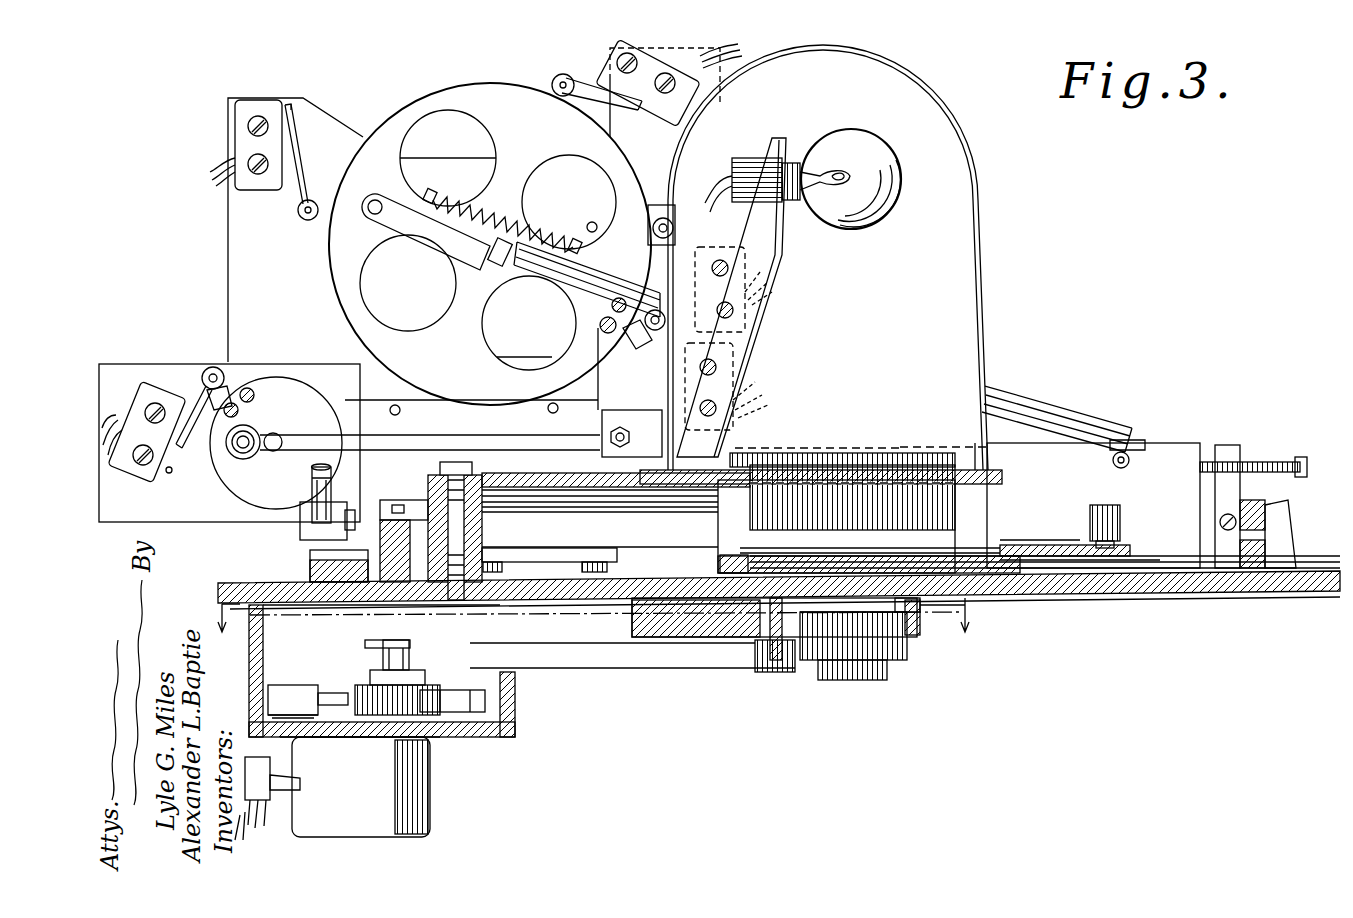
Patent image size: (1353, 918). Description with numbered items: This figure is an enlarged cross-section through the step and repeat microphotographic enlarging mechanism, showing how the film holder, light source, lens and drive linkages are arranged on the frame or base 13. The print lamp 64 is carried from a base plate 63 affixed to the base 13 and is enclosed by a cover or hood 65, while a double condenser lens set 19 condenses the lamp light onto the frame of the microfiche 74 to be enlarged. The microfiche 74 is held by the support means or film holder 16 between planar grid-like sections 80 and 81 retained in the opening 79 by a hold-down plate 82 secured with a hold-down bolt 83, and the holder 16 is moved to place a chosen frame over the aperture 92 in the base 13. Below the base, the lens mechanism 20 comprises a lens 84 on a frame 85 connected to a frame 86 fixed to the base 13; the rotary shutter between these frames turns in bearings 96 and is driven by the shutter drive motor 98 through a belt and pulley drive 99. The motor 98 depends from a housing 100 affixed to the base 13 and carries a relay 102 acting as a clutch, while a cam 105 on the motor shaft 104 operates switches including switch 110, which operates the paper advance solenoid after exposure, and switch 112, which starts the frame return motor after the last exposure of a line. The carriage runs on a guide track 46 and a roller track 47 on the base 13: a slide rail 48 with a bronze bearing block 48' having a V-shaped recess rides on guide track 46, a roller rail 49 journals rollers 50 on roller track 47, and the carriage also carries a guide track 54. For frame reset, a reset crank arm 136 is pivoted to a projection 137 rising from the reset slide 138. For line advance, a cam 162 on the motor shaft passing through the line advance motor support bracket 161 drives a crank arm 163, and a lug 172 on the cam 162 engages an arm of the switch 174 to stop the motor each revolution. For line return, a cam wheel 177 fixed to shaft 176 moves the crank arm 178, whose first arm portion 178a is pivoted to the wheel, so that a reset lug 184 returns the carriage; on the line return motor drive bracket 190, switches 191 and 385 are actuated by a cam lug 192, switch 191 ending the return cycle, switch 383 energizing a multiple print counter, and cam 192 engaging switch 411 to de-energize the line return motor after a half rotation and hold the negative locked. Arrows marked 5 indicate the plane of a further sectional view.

The switch 411 is at (238, 126).
The switch 385 is at (612, 90).
The cam wheel 177 is at (385, 179).
The line return motor drive bracket 190 is at (663, 215).
The crank arm 178 is at (625, 285).
The first arm portion 178a is at (398, 230).
The shaft 176 is at (472, 260).
The switch 383 is at (716, 252).
The print lamp 64 is at (858, 224).
The cover or hood 65 is at (982, 230).
The switch 174 is at (148, 398).
The line advance motor support bracket 161 is at (182, 368).
The lug 172 is at (230, 388).
The cam 162 is at (298, 398).
The crank arm 163 is at (340, 434).
The reset lug 184 is at (444, 465).
The switch 191 is at (732, 385).
The cam lug 192 is at (636, 350).
The base plate 63 is at (977, 446).
The guide track 54 is at (418, 505).
The slide rail 48 is at (386, 529).
The bearing block 48' is at (605, 522).
The reset crank arm 136 is at (318, 510).
The projection 137 is at (322, 538).
The reset slide 138 is at (318, 558).
The double condenser lens set 19 is at (860, 507).
The microfiche 74 is at (962, 552).
The planar grid-like section 80 is at (992, 548).
The support means 16 is at (1031, 526).
The hold-down plate 82 is at (1078, 545).
The hold-down bolt 83 is at (1118, 515).
The roller rail 49 is at (1265, 517).
The rollers 50 is at (1275, 540).
The roller track 47 is at (1268, 560).
The guide track 46 is at (435, 588).
The section line 5 is at (594, 621).
The switch 110 is at (282, 690).
The motor shaft 104 is at (386, 650).
The cam 105 is at (360, 700).
The belt and pulley drive 99 is at (605, 668).
The bearings 96 is at (768, 650).
The aperture 92 is at (853, 636).
The lens mechanism 20 is at (812, 692).
The lens 84 is at (878, 680).
The frame 85 is at (918, 638).
The frame 86 is at (922, 615).
The planar grid-like section 81 is at (998, 560).
The opening 79 is at (1078, 594).
The base 13 is at (1122, 596).
The housing 100 is at (512, 710).
The switch 112 is at (468, 712).
The relay 102 is at (280, 772).
The shutter drive motor 98 is at (372, 806).